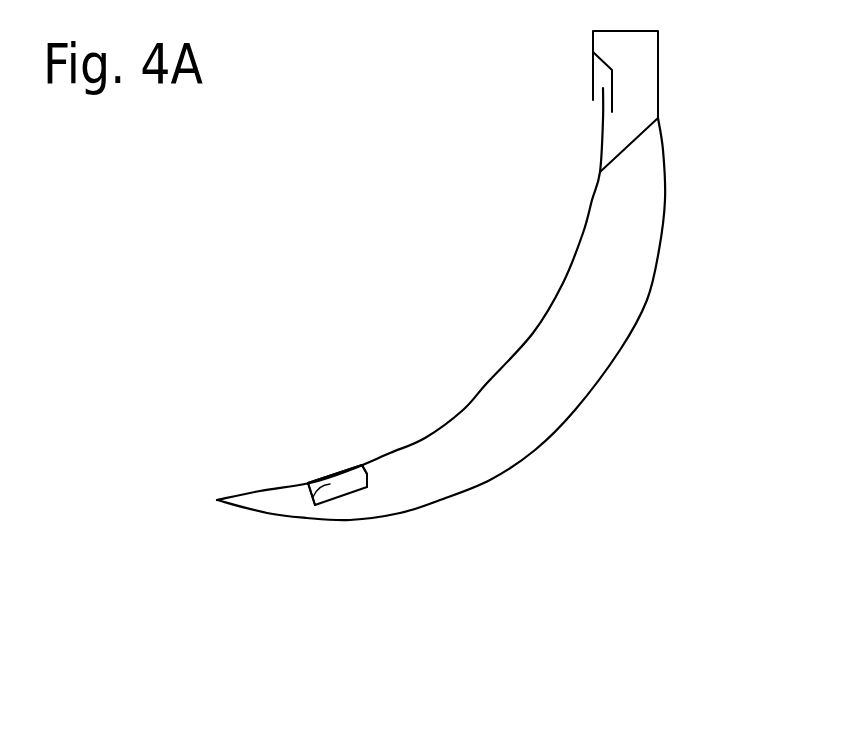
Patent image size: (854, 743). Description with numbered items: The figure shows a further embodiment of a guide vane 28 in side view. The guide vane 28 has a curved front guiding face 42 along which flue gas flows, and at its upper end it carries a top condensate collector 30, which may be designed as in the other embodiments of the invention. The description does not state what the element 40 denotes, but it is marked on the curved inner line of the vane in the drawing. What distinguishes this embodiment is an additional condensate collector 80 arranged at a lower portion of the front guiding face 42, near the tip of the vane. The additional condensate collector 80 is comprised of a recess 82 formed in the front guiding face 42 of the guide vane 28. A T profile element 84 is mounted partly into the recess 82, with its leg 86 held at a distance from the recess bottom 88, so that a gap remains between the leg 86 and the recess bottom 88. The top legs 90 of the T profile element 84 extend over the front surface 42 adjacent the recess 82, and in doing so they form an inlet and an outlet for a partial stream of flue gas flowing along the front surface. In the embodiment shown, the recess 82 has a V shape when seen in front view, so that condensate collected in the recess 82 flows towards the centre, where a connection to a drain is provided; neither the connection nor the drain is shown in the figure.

The guide vane 28 is at (441, 313).
The top condensate collector 30 is at (568, 92).
The inner surface of blade 40 is at (393, 456).
The front guiding face 42 is at (465, 493).
The additional condensate collector 80 is at (278, 500).
The recess 82 is at (348, 487).
The T profile element 84 is at (337, 480).
The leg 86 is at (313, 505).
The recess bottom 88 is at (330, 490).
The top legs 90 is at (310, 482).